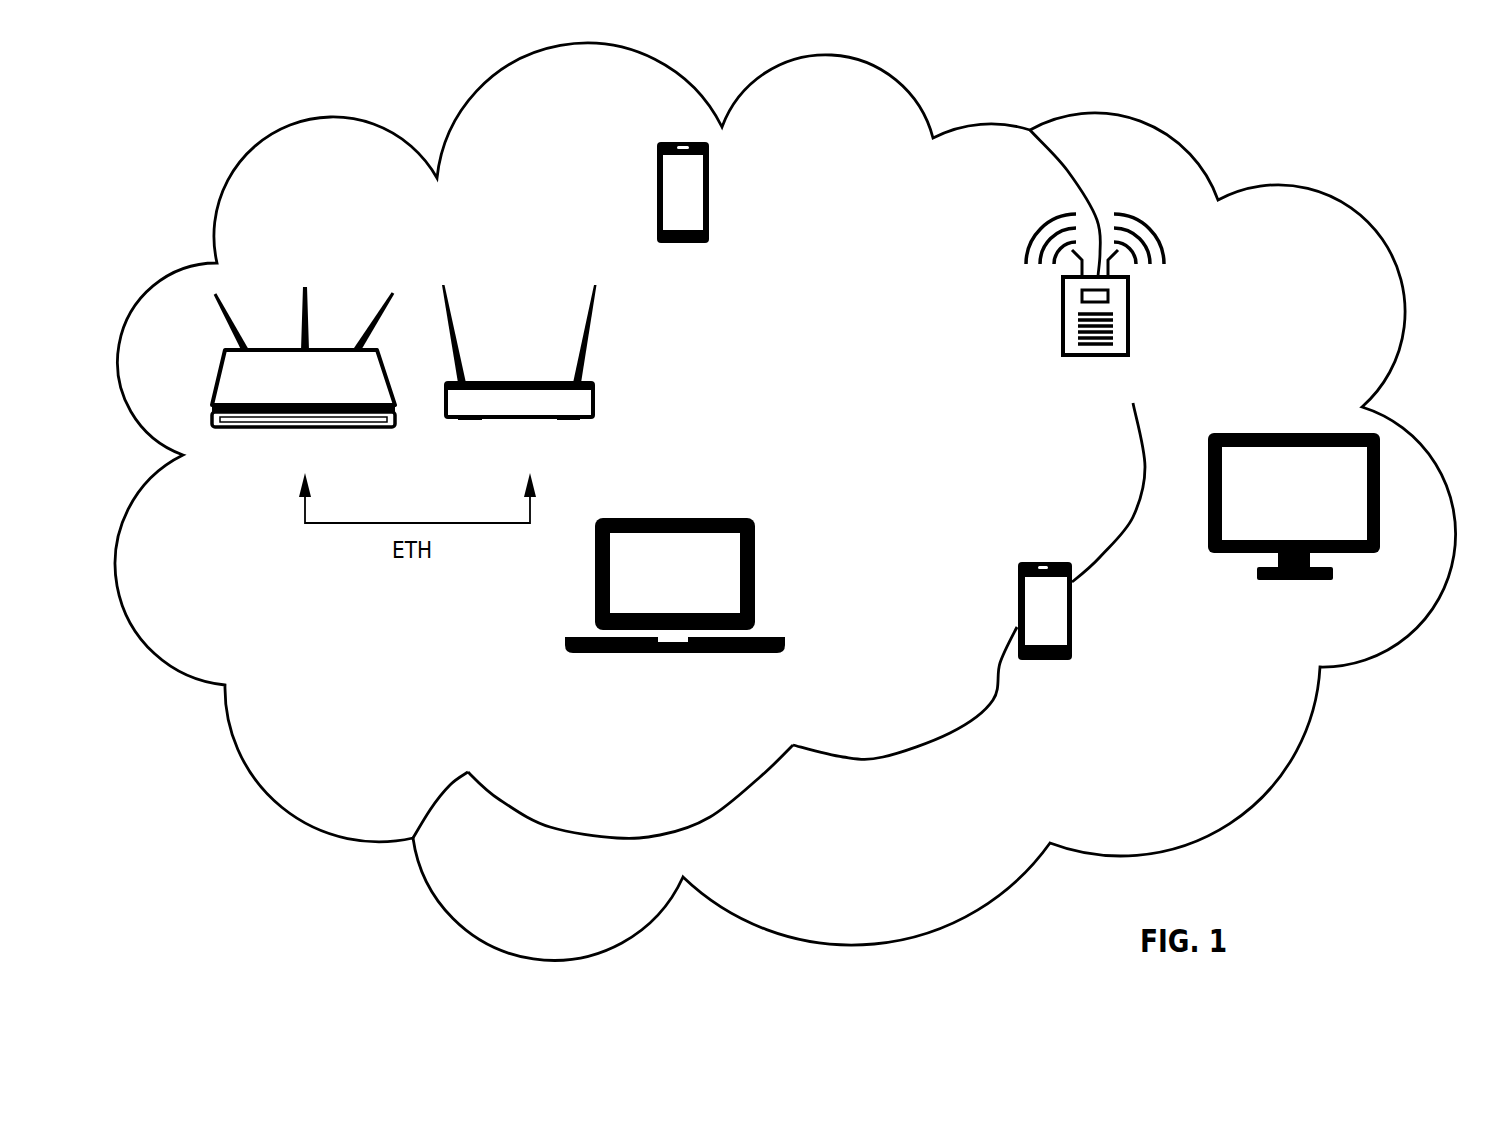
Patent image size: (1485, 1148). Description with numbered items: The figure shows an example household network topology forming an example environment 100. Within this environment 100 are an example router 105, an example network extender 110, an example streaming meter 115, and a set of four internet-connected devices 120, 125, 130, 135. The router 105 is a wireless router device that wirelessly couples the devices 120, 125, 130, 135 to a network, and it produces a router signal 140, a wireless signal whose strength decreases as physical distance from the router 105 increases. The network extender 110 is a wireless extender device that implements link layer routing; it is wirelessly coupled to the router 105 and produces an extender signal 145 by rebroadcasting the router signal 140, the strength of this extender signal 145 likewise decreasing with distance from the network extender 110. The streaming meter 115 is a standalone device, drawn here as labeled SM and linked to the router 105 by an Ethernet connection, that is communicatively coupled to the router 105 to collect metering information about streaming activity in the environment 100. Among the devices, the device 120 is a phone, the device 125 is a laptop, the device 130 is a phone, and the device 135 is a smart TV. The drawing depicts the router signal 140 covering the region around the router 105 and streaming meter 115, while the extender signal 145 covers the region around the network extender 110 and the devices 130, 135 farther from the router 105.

The environment 100 is at (785, 501).
The router 105 is at (593, 397).
The network extender 110 is at (1128, 323).
The streaming meter 115 is at (218, 376).
The device 120 is at (661, 194).
The device 125 is at (727, 518).
The device 130 is at (1027, 562).
The device 135 is at (1232, 553).
The router signal 140 is at (356, 759).
The extender signal 145 is at (779, 514).